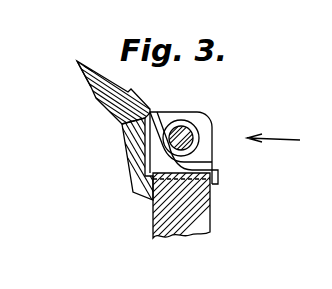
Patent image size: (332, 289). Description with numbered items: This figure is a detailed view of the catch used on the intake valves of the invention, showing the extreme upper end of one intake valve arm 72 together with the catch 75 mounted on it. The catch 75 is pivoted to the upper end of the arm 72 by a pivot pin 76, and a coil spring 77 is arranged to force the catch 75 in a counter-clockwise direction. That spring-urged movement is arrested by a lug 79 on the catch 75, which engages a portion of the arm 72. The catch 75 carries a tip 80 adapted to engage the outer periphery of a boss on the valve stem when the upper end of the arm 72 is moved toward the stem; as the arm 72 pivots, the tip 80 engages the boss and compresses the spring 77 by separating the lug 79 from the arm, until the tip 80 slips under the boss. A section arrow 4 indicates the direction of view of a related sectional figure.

The intake valve arm 72 is at (166, 238).
The catch 75 is at (110, 115).
The pivot pin 76 is at (200, 132).
The coil spring 77 is at (184, 127).
The lug 79 is at (146, 191).
The tip 80 is at (86, 80).
The section line arrow 4 is at (273, 128).